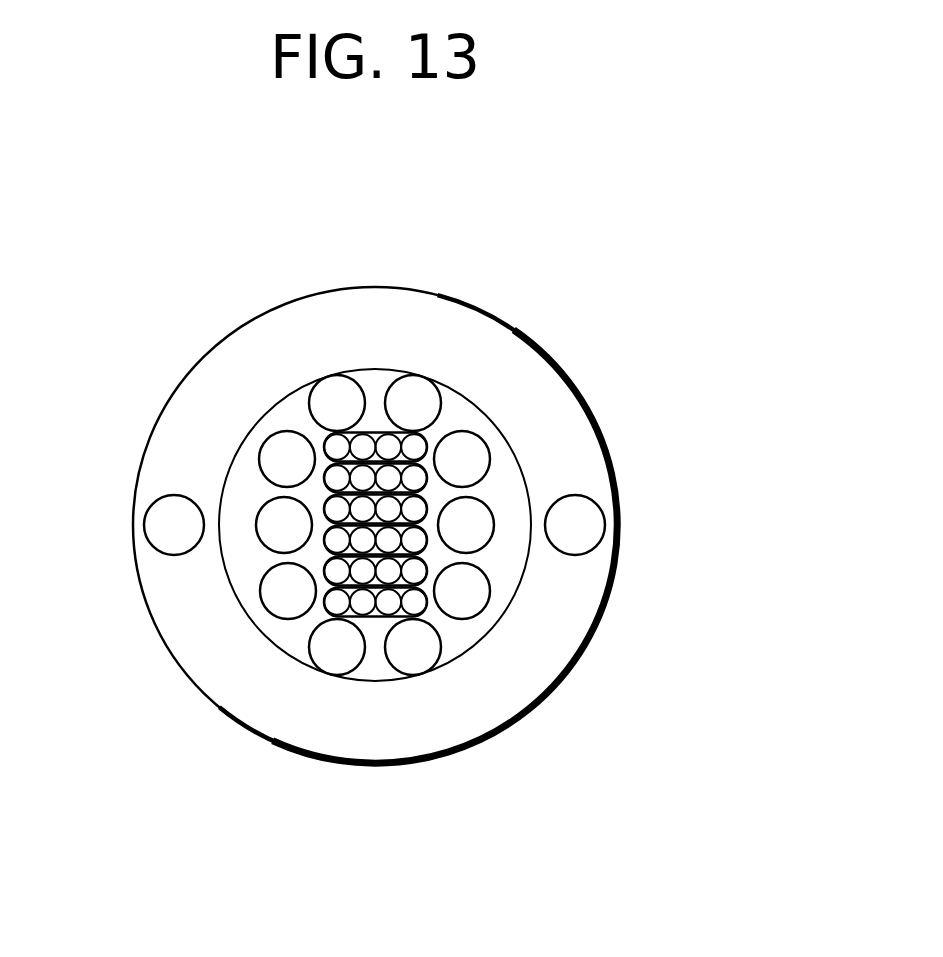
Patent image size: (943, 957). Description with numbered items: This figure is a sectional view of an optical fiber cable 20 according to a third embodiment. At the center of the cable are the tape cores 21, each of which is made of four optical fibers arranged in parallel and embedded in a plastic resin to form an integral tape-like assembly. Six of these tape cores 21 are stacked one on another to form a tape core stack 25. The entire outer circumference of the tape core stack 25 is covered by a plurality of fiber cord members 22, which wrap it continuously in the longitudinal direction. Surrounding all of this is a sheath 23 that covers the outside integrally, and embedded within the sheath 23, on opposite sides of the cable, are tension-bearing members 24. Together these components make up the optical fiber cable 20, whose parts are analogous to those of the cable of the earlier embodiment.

The optical fiber cable 20 is at (840, 269).
The tape core 21 is at (333, 443).
The fiber cord member 22 is at (490, 453).
The sheath 23 is at (587, 648).
The tension-bearing member 24 is at (144, 516).
The tape core stack 25 is at (372, 423).